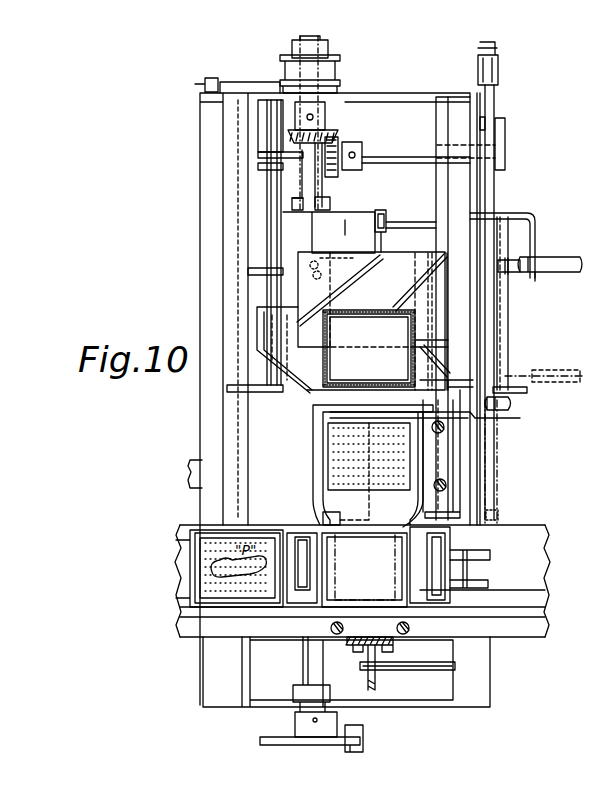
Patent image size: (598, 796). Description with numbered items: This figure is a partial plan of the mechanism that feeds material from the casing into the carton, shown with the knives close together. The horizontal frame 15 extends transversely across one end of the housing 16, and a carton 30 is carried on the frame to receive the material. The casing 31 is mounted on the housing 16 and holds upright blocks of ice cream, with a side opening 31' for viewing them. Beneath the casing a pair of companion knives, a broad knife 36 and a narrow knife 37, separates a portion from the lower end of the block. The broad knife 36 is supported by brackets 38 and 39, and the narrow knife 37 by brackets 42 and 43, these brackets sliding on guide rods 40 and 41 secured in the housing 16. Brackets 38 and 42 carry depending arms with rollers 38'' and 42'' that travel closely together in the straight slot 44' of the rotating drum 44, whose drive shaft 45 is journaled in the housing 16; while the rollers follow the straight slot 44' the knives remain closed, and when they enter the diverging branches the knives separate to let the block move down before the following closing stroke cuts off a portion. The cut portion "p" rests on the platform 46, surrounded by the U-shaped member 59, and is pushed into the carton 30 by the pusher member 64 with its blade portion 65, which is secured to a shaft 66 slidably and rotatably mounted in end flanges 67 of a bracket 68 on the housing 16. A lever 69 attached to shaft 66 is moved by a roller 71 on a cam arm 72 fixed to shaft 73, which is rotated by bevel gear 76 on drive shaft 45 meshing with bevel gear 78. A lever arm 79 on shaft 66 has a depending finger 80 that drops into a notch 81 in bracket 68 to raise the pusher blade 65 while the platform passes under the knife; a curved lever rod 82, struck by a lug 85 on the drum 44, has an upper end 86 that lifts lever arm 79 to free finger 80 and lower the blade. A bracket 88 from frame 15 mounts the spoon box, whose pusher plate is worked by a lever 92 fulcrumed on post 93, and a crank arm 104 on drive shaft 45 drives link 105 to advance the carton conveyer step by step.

The horizontal frame 15 is at (523, 640).
The housing 16 is at (217, 672).
The carton 30 is at (330, 515).
The casing 31 is at (369, 332).
The side opening 31' is at (388, 319).
The broad knife 36 is at (440, 268).
The narrow knife 37 is at (447, 372).
The bracket 38 is at (329, 240).
The roller 38'' is at (342, 262).
The bracket 39 is at (445, 345).
The guide rod 40 is at (270, 131).
The guide rod 41 is at (434, 118).
The bracket 42 is at (252, 242).
The roller 42'' is at (311, 340).
The bracket 43 is at (446, 344).
The drum 44 is at (253, 188).
The straight slot 44' is at (242, 327).
The drive shaft 45 is at (326, 185).
The platform 46 is at (369, 471).
The U-shaped member 59 is at (318, 457).
The pusher member 64 is at (478, 415).
The blade portion 65 is at (338, 418).
The shaft 66 is at (505, 360).
The end flanges 67 is at (498, 212).
The bracket 68 is at (510, 316).
The lever 69 is at (500, 70).
The roller 71 is at (497, 112).
The cam arm 72 is at (506, 138).
The shaft 73 is at (408, 163).
The bevel gear 76 is at (334, 133).
The bevel gear 78 is at (362, 148).
The lever arm 79 is at (537, 275).
The depending finger 80 is at (510, 274).
The notch 81 is at (510, 258).
The curved lever rod 82 is at (406, 222).
The lug 85 is at (380, 210).
The upper end 86 is at (528, 255).
The bracket 88 is at (393, 646).
The lever 92 is at (368, 676).
The post 93 is at (420, 670).
The crank arm 104 is at (345, 732).
The link 105 is at (287, 738).